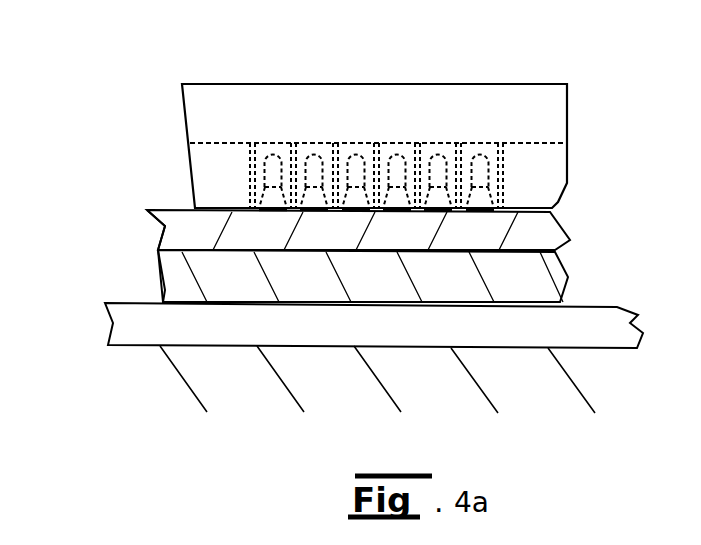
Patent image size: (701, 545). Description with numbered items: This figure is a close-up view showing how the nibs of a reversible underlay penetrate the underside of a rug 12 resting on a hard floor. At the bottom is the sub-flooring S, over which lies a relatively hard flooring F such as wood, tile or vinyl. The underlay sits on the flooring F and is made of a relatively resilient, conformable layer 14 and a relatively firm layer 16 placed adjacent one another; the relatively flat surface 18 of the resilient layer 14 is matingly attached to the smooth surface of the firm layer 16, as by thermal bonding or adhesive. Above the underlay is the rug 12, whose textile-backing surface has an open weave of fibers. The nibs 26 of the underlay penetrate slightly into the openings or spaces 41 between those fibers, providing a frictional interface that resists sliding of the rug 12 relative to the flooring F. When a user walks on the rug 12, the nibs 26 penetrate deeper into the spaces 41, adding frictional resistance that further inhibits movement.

The rug 12 is at (442, 84).
The openings or spaces 41 is at (273, 155).
The nibs 26 is at (500, 172).
The relatively firm layer 16 is at (569, 233).
The relatively resilient, conformable layer 14 is at (570, 269).
The relatively flat surface 18 is at (162, 250).
The flooring F is at (133, 323).
The sub-flooring S is at (377, 379).